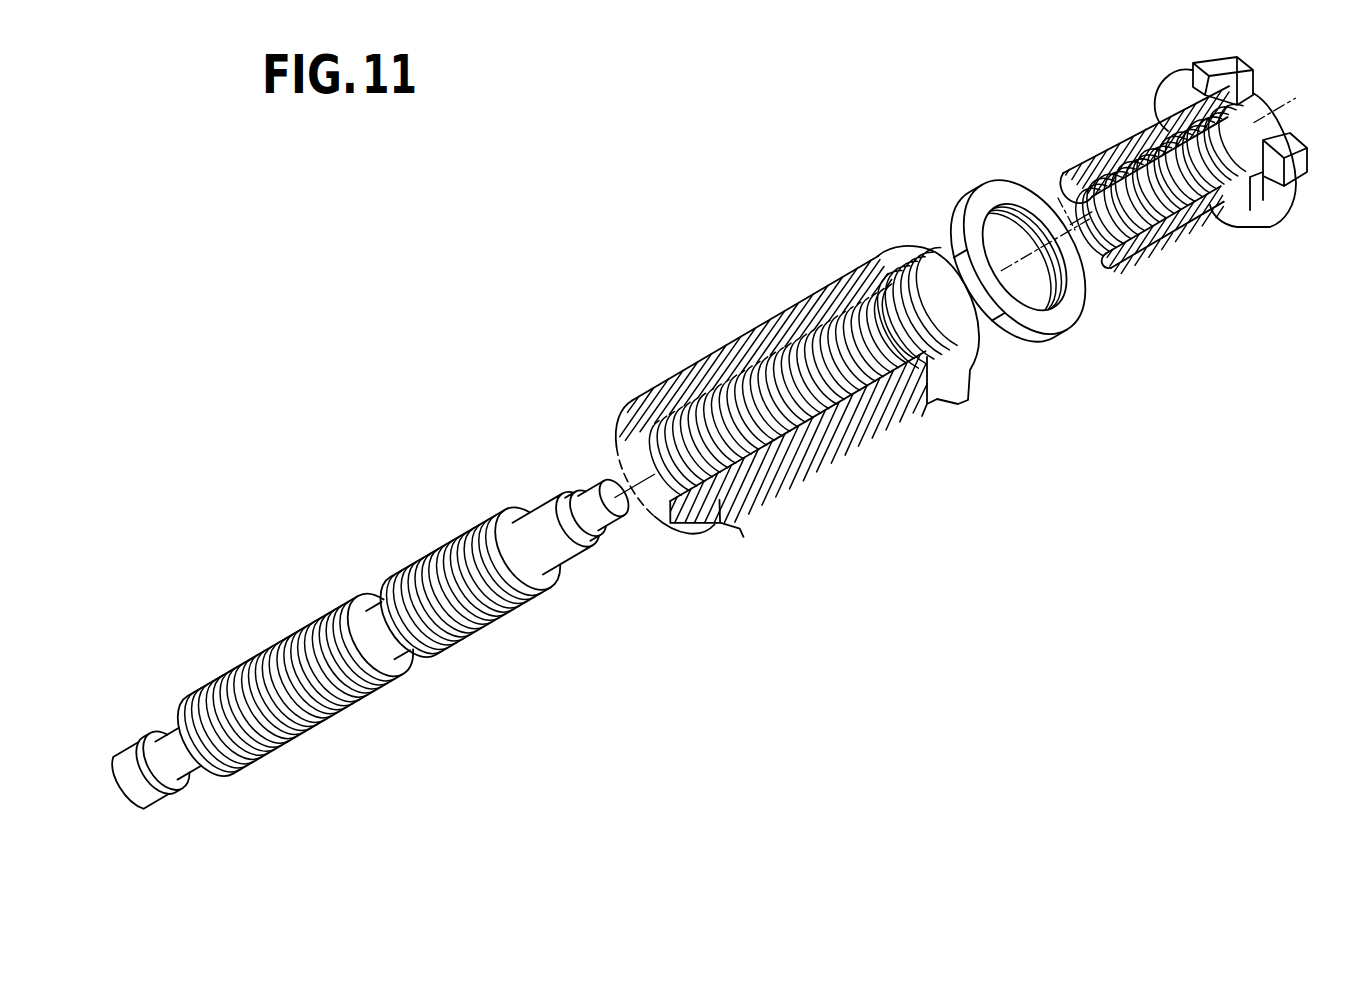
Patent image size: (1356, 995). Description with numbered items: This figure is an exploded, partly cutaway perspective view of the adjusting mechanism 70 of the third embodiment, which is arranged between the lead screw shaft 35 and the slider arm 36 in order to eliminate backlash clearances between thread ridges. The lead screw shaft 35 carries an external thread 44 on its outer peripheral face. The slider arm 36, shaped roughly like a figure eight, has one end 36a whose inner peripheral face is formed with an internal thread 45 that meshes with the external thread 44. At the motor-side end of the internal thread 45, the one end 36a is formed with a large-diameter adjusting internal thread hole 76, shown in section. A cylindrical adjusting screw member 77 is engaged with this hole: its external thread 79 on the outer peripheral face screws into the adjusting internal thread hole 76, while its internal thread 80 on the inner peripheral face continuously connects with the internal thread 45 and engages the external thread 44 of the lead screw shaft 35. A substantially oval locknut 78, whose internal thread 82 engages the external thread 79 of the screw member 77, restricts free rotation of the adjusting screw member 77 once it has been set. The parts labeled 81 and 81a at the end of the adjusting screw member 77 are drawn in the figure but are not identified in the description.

The lead screw shaft 35 is at (407, 561).
The external thread 44 is at (458, 547).
The internal thread 45 is at (618, 444).
The adjusting mechanism 70 is at (812, 284).
The adjusting internal thread hole 76 is at (804, 328).
The slider arm 36 is at (822, 446).
The one end of the slider arm 36a is at (684, 377).
The locknut 78 is at (1053, 341).
The internal thread of the locknut 82 is at (1064, 278).
The internal thread of the adjusting screw member 80 is at (1060, 194).
The adjusting screw member 77 is at (1175, 240).
The external thread of the adjusting screw member 79 is at (1112, 142).
The castellated nut 81 is at (1264, 106).
The slots of nut 81a is at (1263, 198).